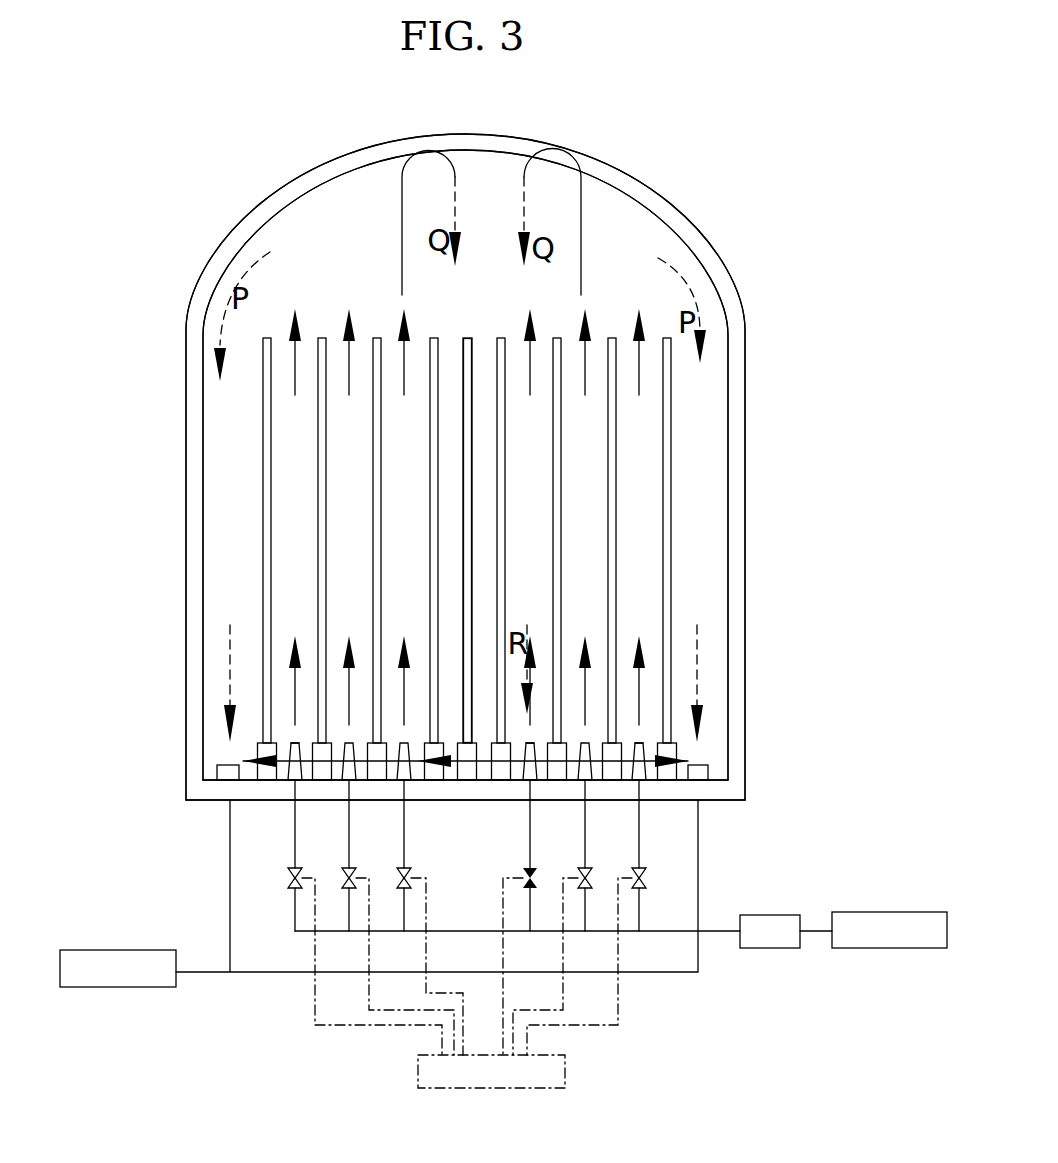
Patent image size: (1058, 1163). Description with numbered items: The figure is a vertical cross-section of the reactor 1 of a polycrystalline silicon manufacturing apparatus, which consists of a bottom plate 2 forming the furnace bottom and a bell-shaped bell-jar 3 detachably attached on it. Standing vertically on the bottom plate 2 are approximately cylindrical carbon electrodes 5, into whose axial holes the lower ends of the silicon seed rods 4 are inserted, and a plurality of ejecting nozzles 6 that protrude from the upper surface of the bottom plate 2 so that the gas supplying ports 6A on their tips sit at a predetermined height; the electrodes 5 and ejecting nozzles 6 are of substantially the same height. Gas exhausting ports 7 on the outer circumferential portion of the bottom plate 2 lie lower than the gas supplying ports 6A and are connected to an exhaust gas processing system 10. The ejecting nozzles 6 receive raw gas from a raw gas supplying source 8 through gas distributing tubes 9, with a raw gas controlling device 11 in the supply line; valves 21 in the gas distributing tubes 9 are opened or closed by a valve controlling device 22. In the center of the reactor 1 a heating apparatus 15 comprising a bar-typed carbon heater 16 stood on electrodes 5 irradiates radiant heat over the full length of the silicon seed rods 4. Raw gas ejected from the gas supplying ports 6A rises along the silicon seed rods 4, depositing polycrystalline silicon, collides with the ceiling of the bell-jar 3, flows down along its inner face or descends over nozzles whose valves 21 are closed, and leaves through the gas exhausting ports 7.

The reactor 1 is at (760, 242).
The bottom plate 2 is at (225, 800).
The bell-jar 3 is at (186, 426).
The silicon seed rods 4 is at (322, 336).
The electrodes 5 is at (258, 776).
The ejecting nozzles 6 is at (291, 772).
The gas supplying ports 6A is at (290, 744).
The gas exhausting ports 7 is at (222, 765).
The raw gas supplying source 8 is at (925, 949).
The gas distributing tubes 9 is at (295, 902).
The exhaust gas processing system 10 is at (105, 988).
The raw gas controlling device 11 is at (768, 949).
The heating apparatus 15 is at (481, 326).
The bar-typed carbon heater 16 is at (462, 473).
The valves 21 is at (302, 878).
The valve controlling device 22 is at (565, 1086).